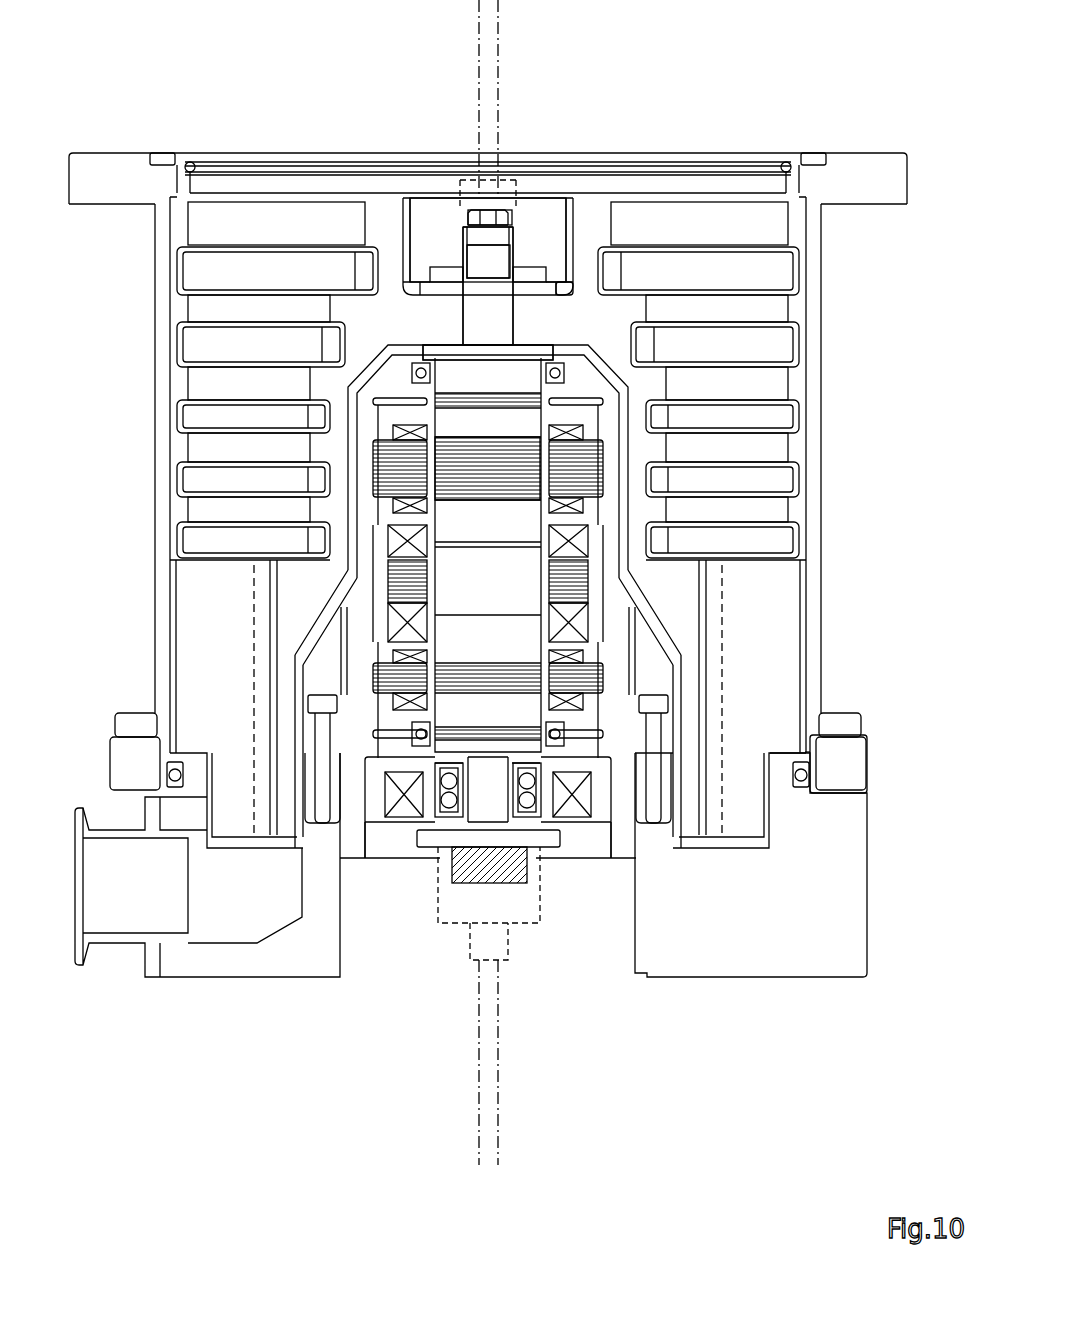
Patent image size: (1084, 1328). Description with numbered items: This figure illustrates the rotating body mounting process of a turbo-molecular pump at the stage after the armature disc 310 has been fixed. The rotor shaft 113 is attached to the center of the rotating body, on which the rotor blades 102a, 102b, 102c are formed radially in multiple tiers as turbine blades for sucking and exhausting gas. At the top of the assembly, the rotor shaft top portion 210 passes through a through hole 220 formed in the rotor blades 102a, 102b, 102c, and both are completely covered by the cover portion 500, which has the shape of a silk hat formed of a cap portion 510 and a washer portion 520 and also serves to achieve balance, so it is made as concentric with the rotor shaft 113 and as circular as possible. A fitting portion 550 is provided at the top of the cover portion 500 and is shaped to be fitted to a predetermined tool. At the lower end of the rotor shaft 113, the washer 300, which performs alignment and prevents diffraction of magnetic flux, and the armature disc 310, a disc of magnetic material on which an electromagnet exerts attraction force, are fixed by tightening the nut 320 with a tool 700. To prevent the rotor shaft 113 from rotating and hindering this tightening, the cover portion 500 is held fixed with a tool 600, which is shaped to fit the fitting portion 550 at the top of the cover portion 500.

The tool 600 is at (487, 47).
The cover portion 500 is at (470, 260).
The fitting portion 550 is at (508, 230).
The cap portion 510 is at (566, 234).
The washer portion 520 is at (560, 285).
The rotor shaft top portion 210 is at (480, 207).
The through hole 220 is at (520, 318).
The rotor blade 102a is at (205, 222).
The rotor blade 102b is at (200, 305).
The rotor blade 102c is at (200, 378).
The rotor shaft 113 is at (530, 422).
The washer 300 is at (492, 822).
The armature disc 310 is at (545, 835).
The nut 320 is at (470, 882).
The tool 700 is at (505, 1068).